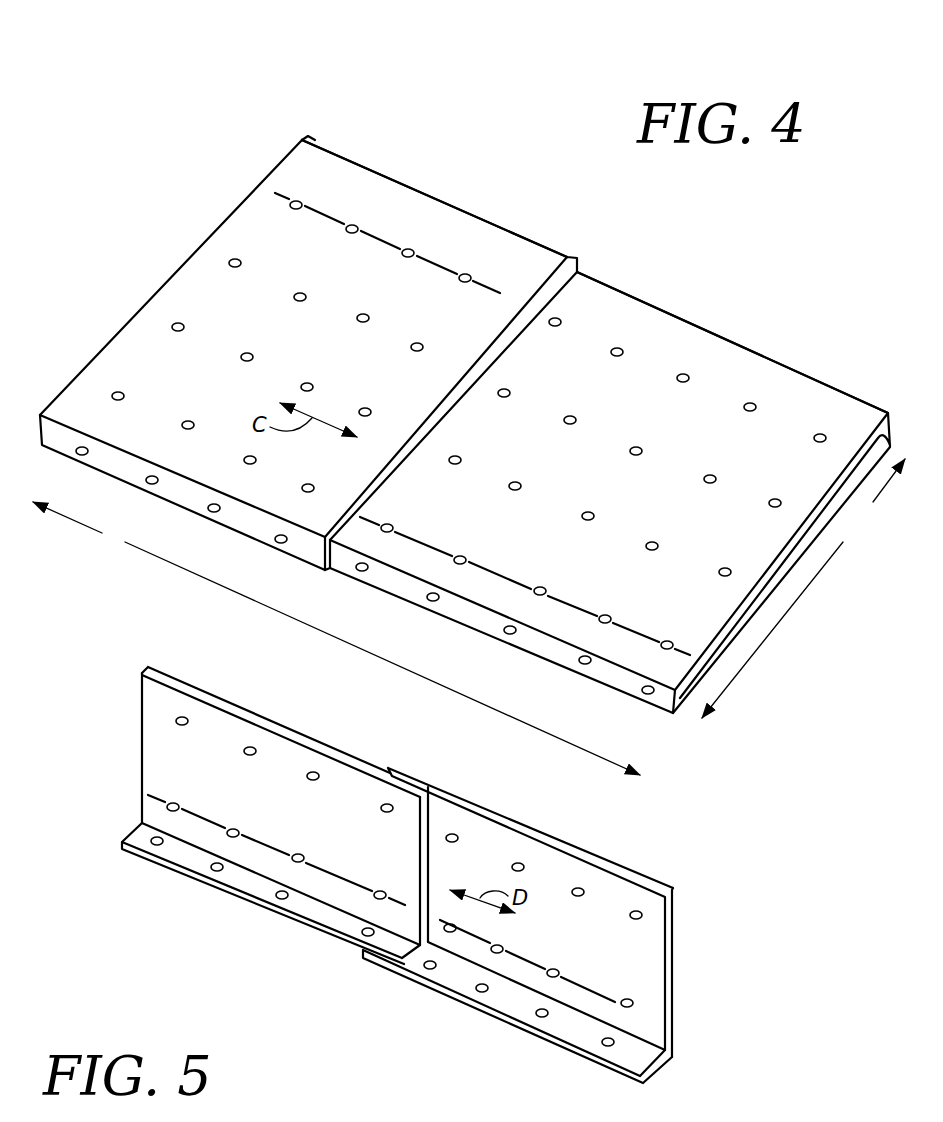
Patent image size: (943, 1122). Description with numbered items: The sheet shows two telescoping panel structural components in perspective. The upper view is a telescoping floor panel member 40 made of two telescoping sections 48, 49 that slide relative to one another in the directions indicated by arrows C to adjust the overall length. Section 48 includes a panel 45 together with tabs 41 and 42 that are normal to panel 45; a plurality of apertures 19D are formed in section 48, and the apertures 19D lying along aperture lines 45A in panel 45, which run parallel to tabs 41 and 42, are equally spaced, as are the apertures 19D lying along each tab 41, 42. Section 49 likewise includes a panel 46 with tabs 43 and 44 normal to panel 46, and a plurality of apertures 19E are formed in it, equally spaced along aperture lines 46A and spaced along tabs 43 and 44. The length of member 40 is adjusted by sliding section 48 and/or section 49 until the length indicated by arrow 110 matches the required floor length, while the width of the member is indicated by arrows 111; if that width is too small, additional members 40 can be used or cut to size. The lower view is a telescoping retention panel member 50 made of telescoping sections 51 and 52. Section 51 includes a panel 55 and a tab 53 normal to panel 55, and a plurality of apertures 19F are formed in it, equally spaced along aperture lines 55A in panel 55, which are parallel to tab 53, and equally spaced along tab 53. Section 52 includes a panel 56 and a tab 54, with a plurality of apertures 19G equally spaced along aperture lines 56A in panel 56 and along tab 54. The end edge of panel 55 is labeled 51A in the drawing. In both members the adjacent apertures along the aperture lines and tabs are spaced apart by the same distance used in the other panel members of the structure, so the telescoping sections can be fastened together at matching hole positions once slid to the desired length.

In FIG. 4, the telescoping floor panel member 40 is at (557, 217).
In FIG. 4, the tab 41 is at (172, 494).
In FIG. 4, the tab 42 is at (320, 145).
In FIG. 4, the tab 43 is at (490, 623).
In FIG. 4, the tab 44 is at (880, 445).
In FIG. 4, the panel 45 is at (303, 312).
In FIG. 4, the aperture lines 45A is at (272, 190).
In FIG. 4, the panel 46 is at (624, 463).
In FIG. 4, the aperture lines 46A is at (628, 622).
In FIG. 4, the telescoping section 48 is at (452, 192).
In FIG. 4, the telescoping section 49 is at (737, 332).
In FIG. 4, the apertures 19D is at (267, 375).
In FIG. 4, the apertures 19E is at (704, 480).
In FIG. 4, the arrow 110 is at (346, 645).
In FIG. 4, the arrows 111 is at (793, 607).
In FIG. 5, the telescoping retention panel member 50 is at (512, 778).
In FIG. 5, the telescoping section 51 is at (322, 744).
In FIG. 5, the end edge of first wall panel 51A is at (142, 770).
In FIG. 5, the telescoping section 52 is at (630, 858).
In FIG. 5, the tab 53 is at (260, 895).
In FIG. 5, the tab 54 is at (447, 983).
In FIG. 5, the panel 55 is at (231, 816).
In FIG. 5, the aperture lines 55A is at (269, 815).
In FIG. 5, the panel 56 is at (564, 931).
In FIG. 5, the aperture lines 56A is at (607, 957).
In FIG. 5, the apertures 19F is at (314, 780).
In FIG. 5, the apertures 19G is at (553, 969).